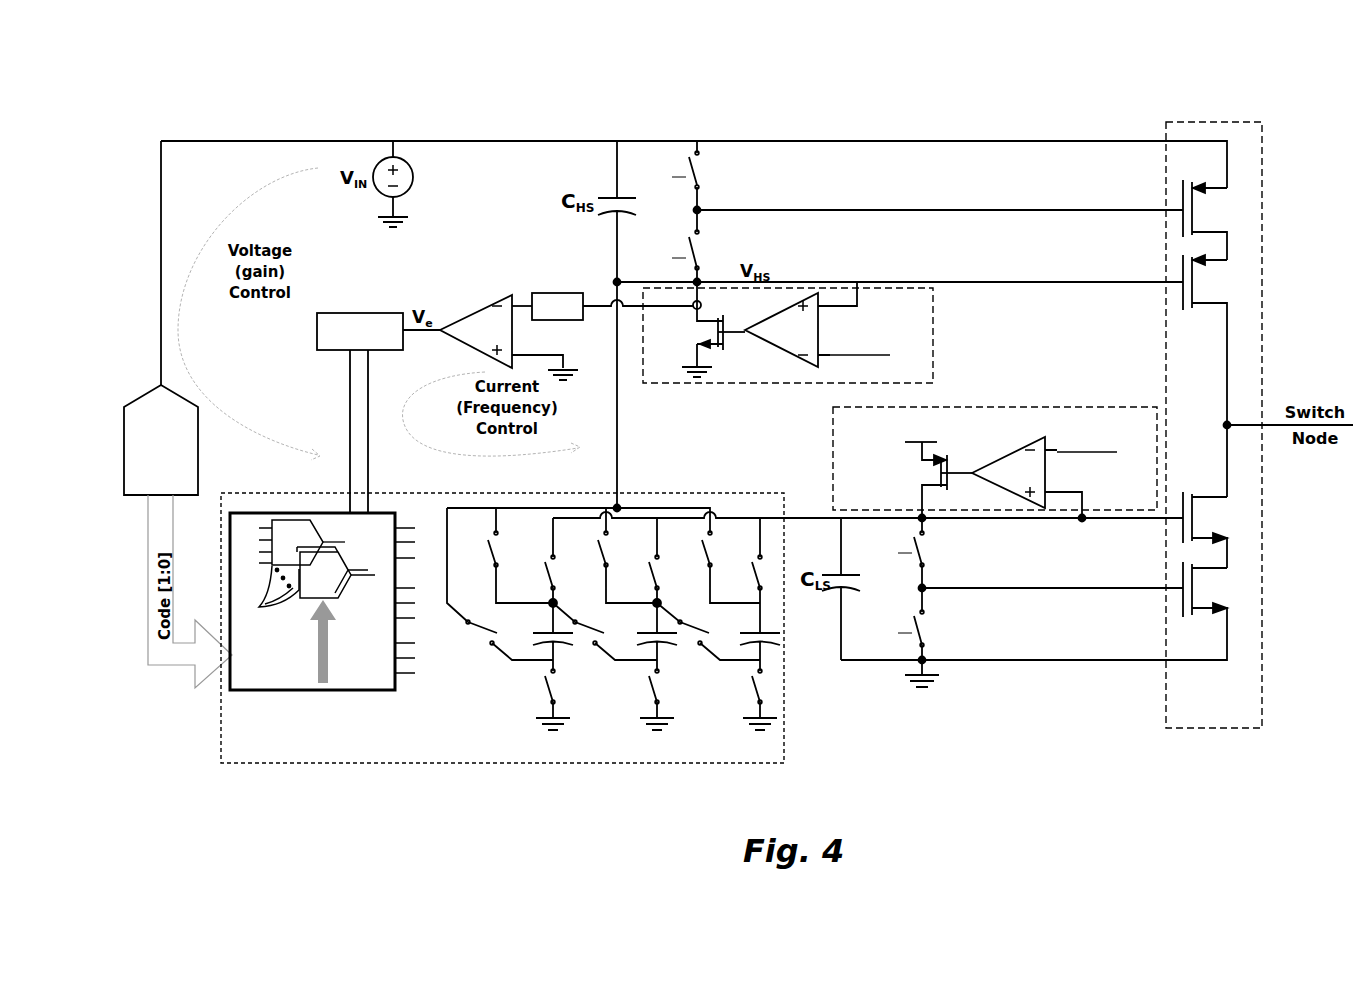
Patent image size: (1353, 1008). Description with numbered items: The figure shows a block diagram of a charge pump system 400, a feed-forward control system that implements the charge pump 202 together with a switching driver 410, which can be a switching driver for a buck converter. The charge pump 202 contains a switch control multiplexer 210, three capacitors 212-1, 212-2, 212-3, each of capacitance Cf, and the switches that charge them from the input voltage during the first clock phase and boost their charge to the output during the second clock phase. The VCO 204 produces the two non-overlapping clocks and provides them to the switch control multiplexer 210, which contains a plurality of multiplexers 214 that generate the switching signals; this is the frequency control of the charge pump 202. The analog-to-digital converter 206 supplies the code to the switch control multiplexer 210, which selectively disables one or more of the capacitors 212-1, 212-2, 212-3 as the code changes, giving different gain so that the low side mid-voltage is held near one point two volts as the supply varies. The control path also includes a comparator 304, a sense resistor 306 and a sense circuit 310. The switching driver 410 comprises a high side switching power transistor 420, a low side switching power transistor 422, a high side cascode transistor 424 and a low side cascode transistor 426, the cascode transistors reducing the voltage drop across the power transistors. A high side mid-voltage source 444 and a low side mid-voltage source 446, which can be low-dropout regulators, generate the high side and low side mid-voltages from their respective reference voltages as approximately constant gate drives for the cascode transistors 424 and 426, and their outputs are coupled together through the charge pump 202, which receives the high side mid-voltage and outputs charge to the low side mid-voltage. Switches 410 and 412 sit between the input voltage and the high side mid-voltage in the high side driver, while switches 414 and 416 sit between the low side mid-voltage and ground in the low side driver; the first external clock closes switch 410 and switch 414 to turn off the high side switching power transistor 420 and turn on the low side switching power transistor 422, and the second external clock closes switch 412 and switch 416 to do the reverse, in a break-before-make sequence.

The charge pump system 400 is at (1313, 111).
The charge pump 202 is at (784, 755).
The voltage controlled oscillator (VCO) 204 is at (400, 313).
The ADC 206 is at (199, 470).
The switch control multiplexer 210 is at (335, 635).
The capacitor 212-1 is at (573, 645).
The capacitor 212-2 is at (677, 645).
The capacitor 212-3 is at (780, 645).
The multiplexers 214 is at (276, 600).
The comparator 304 is at (483, 300).
The sense resistor 306 is at (553, 293).
The sense circuit 310 is at (694, 308).
The switching driver 410 is at (700, 151).
The switch 412 is at (700, 231).
The switch 414 is at (925, 533).
The switch 416 is at (925, 612).
The high side switching power transistor 420 is at (1196, 198).
The low side switching power transistor 422 is at (1196, 582).
The high side cascode transistor 424 is at (1196, 272).
The low side cascode transistor 426 is at (1196, 503).
The high side mid-voltage source 444 is at (776, 362).
The low side mid-voltage source 446 is at (833, 420).